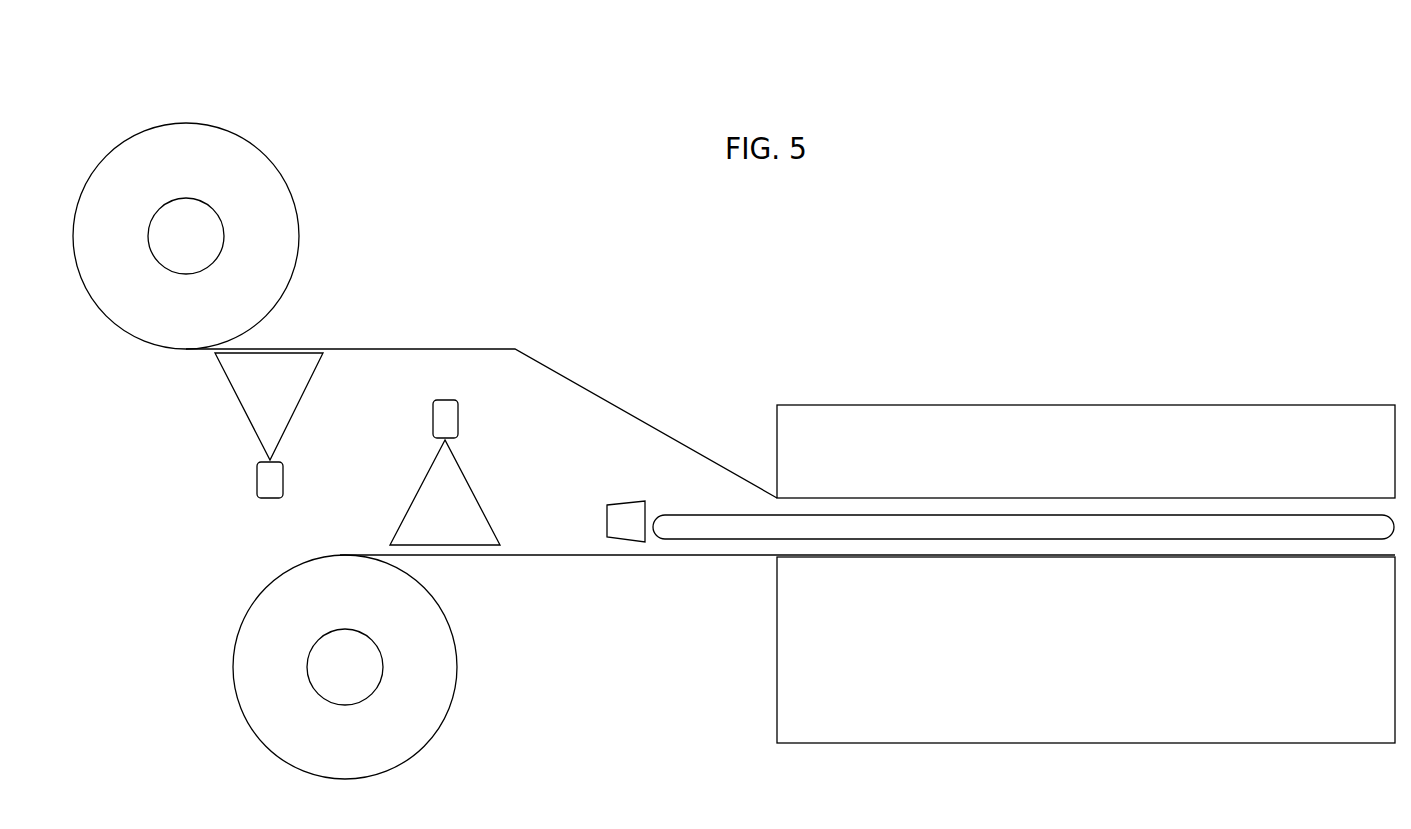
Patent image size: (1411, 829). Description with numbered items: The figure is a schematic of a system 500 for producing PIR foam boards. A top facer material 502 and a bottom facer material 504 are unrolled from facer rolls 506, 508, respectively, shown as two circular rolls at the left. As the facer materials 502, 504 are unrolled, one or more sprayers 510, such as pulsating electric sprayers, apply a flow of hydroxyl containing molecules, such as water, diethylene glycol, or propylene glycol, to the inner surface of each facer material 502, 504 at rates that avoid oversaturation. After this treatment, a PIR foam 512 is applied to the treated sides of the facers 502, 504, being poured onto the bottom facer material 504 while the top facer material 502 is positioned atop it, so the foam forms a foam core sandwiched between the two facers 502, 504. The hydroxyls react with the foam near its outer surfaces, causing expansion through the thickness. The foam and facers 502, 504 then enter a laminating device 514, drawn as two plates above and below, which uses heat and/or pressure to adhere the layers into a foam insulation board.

The system 500 is at (1212, 205).
The top facer material 502 is at (540, 368).
The bottom facer material 504 is at (587, 558).
The facer roll 506 is at (293, 193).
The facer roll 508 is at (458, 668).
The sprayer 510 is at (290, 495).
The PIR foam 512 is at (887, 523).
The laminating device 514 is at (1227, 422).